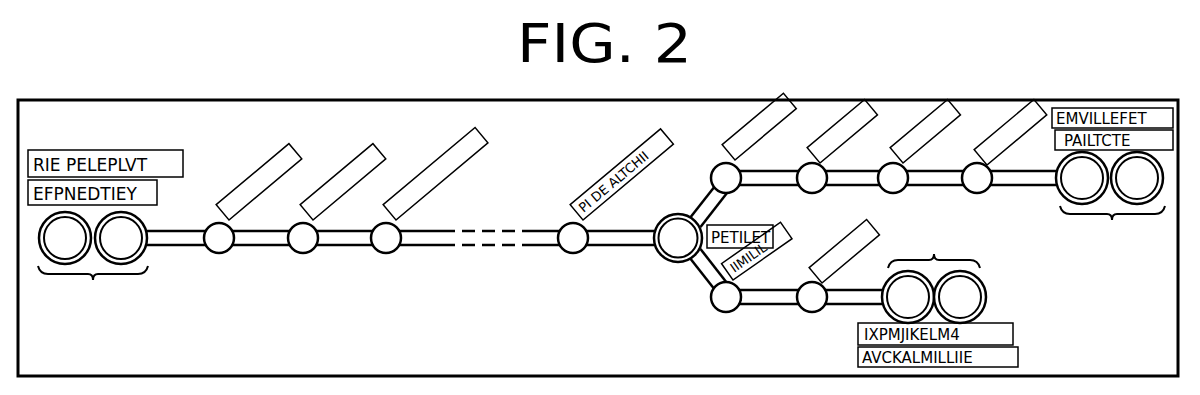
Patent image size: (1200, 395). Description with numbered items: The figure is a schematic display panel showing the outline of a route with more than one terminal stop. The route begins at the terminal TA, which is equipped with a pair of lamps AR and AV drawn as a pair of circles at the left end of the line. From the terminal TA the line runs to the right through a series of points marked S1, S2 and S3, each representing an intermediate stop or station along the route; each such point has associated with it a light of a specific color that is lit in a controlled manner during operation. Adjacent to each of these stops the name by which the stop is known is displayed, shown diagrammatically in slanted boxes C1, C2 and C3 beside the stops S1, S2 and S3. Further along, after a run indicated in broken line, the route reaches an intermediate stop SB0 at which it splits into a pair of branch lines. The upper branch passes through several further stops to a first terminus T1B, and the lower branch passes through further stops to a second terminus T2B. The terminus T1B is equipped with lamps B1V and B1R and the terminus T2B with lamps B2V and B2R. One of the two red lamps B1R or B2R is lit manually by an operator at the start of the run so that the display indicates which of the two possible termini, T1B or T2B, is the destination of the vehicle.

The red lamp at terminal TA AR is at (65, 238).
The lamp at terminal TA AV is at (121, 238).
The terminal TA is at (93, 289).
The intermediate stop S1 is at (219, 259).
The intermediate stop S2 is at (303, 259).
The intermediate stop S3 is at (386, 259).
The name box C1 is at (267, 174).
The name box C2 is at (355, 175).
The name box C3 is at (439, 165).
The intermediate stop at which the route splits SB0 is at (678, 238).
The lamp of terminus T1B B1V is at (1082, 178).
The red lamp of terminus T1B B1R is at (1137, 178).
The terminus T1B is at (1112, 232).
The lamp of terminus T2B B2V is at (908, 297).
The red lamp of terminus T2B B2R is at (960, 297).
The terminus T2B is at (934, 252).